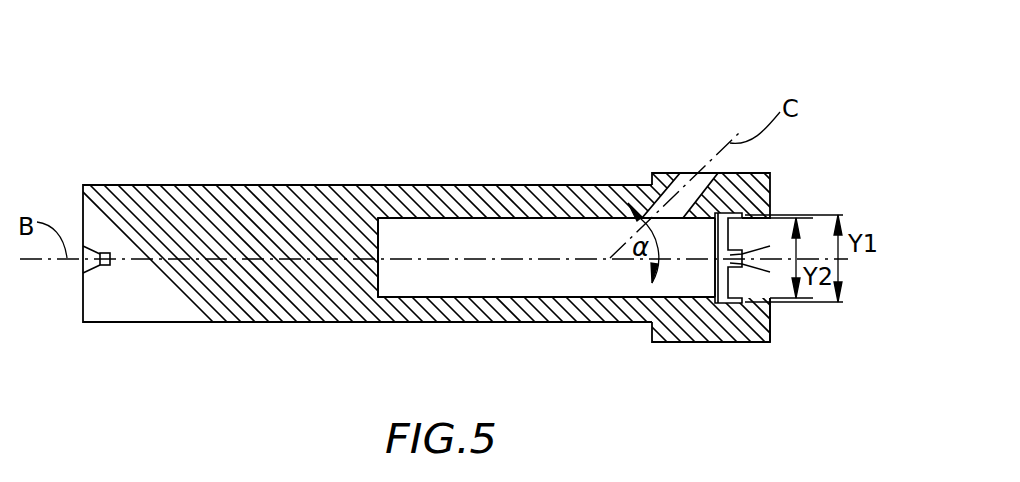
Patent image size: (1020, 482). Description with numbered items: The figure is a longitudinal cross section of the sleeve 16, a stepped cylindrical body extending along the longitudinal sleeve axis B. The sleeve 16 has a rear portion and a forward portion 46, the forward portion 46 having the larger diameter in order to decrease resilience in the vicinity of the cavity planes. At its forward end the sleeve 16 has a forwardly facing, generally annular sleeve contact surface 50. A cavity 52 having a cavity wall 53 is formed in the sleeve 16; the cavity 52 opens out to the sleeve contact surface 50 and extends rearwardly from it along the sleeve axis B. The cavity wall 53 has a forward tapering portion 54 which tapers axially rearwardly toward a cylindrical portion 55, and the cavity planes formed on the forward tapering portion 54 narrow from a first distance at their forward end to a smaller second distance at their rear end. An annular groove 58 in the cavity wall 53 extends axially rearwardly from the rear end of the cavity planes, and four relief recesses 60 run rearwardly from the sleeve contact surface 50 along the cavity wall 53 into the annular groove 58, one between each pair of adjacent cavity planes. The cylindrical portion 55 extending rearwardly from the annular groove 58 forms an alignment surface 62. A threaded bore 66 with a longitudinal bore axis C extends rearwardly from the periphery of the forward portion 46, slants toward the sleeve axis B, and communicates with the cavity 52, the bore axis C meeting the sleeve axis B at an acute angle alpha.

The sleeve 16 is at (233, 108).
The forward portion 46 is at (708, 133).
The sleeve contact surface 50 is at (770, 320).
The cavity 52 is at (541, 236).
The cavity wall 53 is at (508, 222).
The cylindrical portion 55 is at (431, 236).
The alignment surface 62 is at (545, 297).
The threaded bore 66 is at (683, 170).
The forward tapering portion 54 is at (733, 228).
The annular groove 58 is at (735, 293).
The relief recess 60 is at (708, 272).